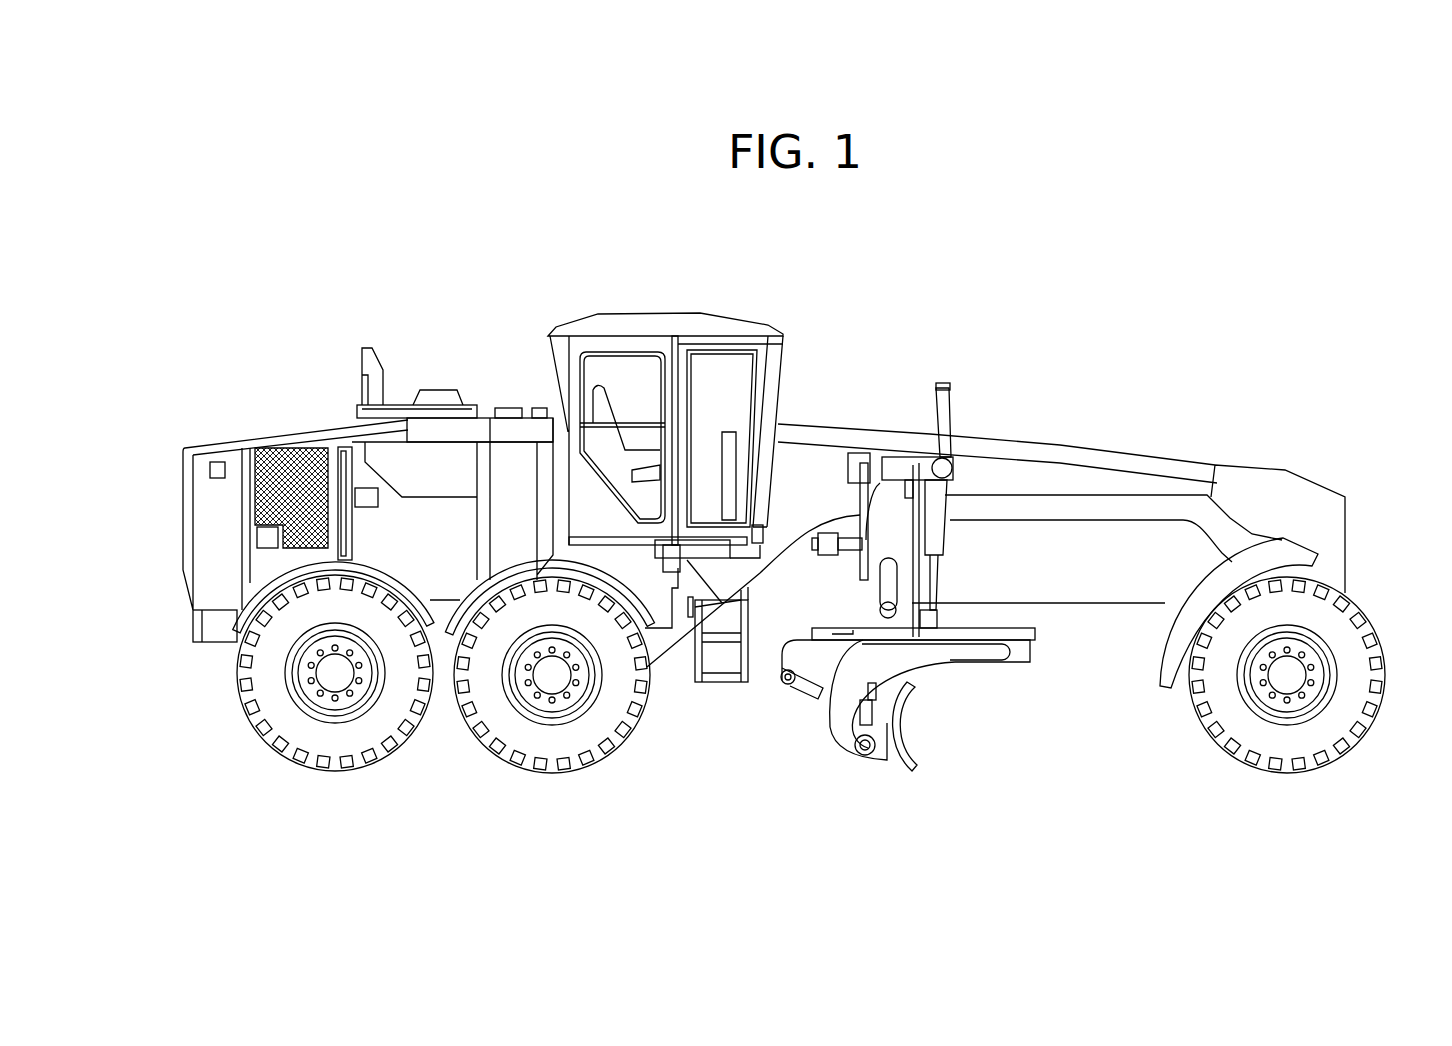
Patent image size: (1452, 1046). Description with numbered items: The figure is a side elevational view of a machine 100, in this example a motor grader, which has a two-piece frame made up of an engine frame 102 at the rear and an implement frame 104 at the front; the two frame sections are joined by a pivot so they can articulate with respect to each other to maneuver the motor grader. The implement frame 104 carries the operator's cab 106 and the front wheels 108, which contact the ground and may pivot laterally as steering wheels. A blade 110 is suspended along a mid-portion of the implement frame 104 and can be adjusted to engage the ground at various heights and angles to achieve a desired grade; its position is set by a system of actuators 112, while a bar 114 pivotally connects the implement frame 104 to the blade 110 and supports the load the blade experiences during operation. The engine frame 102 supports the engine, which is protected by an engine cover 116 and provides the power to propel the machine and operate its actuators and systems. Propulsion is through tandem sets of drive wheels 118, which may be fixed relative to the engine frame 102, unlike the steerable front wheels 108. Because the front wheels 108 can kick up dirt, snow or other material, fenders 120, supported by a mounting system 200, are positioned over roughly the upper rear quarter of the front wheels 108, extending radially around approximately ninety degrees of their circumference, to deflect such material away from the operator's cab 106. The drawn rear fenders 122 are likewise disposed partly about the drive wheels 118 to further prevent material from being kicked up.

The machine 100 is at (993, 361).
The engine frame 102 is at (218, 632).
The implement frame 104 is at (1237, 474).
The operator's cab 106 is at (585, 325).
The front wheels 108 is at (1220, 700).
The blade 110 is at (918, 736).
The actuators 112 is at (868, 566).
The bar 114 is at (985, 617).
The engine cover 116 is at (303, 465).
The drive wheels 118 is at (325, 738).
The fenders 120 is at (1308, 552).
The rear fenders 122 is at (275, 588).
The mounting system 200 is at (1288, 528).